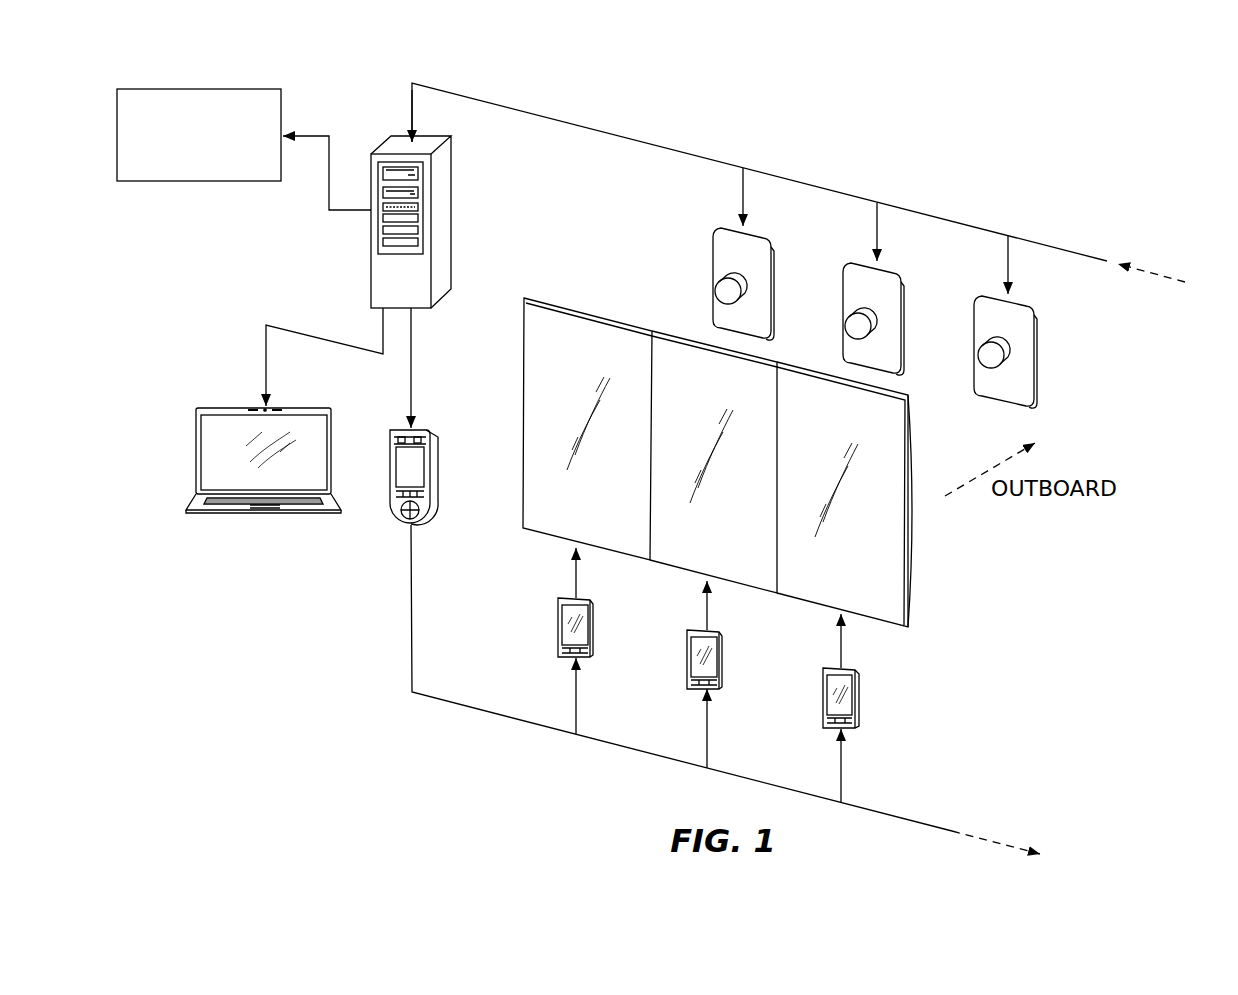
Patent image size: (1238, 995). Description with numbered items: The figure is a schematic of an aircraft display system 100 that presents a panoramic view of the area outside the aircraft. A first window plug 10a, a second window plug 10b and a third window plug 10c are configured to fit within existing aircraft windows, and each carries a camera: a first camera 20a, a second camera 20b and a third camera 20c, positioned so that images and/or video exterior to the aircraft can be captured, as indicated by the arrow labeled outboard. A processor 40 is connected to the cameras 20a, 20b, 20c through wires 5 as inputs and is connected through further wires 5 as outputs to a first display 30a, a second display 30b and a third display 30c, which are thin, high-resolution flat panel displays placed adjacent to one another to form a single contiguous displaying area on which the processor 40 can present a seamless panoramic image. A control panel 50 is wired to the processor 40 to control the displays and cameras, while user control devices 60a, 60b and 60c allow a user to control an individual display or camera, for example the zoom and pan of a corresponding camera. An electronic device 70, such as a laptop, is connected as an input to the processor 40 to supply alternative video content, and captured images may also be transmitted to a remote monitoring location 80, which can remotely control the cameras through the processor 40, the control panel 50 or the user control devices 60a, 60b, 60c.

The wires 5 is at (808, 183).
The first window plug 10a is at (718, 248).
The second window plug 10b is at (860, 278).
The third window plug 10c is at (993, 313).
The first camera 20a is at (727, 290).
The second camera 20b is at (857, 326).
The third camera 20c is at (990, 357).
The first display 30a is at (543, 525).
The second display 30b is at (665, 557).
The third display 30c is at (793, 590).
The processor 40 is at (440, 213).
The control panel 50 is at (438, 480).
The first user control device 60a is at (593, 633).
The second user control device 60b is at (722, 663).
The third user control device 60c is at (859, 700).
The electronic device 70 is at (213, 408).
The remote monitoring location 80 is at (196, 88).
The aircraft display system 100 is at (1115, 155).